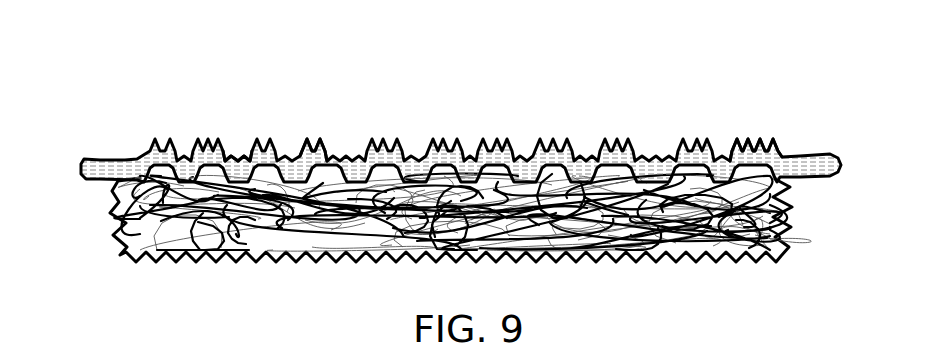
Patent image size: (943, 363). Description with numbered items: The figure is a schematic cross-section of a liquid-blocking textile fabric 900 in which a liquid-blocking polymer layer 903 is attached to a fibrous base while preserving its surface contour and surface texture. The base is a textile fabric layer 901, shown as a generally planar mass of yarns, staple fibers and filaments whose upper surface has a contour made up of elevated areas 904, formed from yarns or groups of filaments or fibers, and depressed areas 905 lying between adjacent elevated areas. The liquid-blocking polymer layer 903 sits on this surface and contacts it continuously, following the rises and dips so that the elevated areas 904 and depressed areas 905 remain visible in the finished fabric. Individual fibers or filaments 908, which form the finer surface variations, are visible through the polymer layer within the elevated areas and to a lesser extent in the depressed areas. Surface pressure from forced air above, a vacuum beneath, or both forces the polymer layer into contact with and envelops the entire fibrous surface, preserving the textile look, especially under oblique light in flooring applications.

The liquid-blocking textile fabric 900 is at (142, 46).
The textile fabric layer 901 is at (104, 230).
The liquid-blocking polymer layer 903 is at (110, 170).
The elevated areas 904 is at (317, 142).
The depressed areas 905 is at (235, 160).
The individual fibers or filaments 908 is at (740, 140).